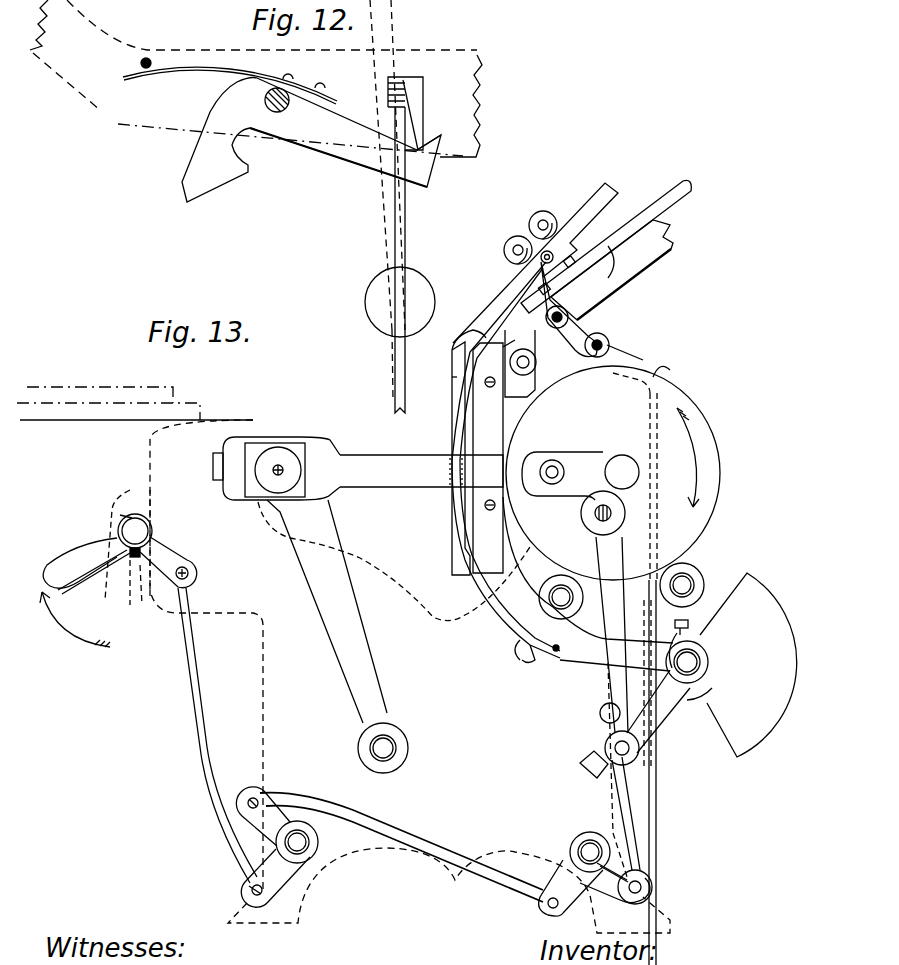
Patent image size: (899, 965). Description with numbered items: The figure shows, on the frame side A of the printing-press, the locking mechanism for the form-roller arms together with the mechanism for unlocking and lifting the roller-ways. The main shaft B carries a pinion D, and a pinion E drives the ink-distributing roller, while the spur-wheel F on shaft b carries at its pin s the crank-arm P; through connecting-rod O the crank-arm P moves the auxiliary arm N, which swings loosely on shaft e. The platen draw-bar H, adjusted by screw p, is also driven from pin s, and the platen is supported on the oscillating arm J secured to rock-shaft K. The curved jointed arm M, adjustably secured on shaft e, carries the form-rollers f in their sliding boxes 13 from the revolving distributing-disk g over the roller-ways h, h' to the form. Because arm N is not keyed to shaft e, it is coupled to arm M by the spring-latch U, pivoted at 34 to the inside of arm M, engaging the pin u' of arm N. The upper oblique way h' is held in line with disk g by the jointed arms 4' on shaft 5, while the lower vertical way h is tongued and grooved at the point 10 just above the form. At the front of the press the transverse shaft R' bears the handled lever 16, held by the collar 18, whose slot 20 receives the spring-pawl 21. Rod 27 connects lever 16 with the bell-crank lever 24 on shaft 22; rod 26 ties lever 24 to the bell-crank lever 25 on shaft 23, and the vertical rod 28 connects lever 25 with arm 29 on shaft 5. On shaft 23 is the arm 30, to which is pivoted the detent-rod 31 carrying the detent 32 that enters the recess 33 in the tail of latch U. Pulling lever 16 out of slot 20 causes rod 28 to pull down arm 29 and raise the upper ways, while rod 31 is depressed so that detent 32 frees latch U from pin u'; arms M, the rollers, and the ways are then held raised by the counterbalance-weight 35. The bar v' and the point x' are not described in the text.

In FIG. 12, the detent 32 is at (417, 97).
In FIG. 12, the recess 33 is at (422, 150).
In FIG. 12, the pivot of spring-latch 34 is at (266, 99).
In FIG. 13, the pivot of spring-latch 34 is at (559, 643).
In FIG. 12, the detent-rod 31 is at (408, 227).
In FIG. 13, the detent-rod 31 is at (623, 805).
In FIG. 12, the curved jointed arm M is at (118, 112).
In FIG. 13, the curved jointed arm M is at (456, 432).
In FIG. 12, the spring-latch U is at (282, 130).
In FIG. 13, the spring-latch U is at (597, 670).
In FIG. 13, the upper oblique roller-way h' is at (535, 260).
In FIG. 13, the ink-distributing disk g is at (678, 190).
In FIG. 13, the bar v' is at (619, 268).
In FIG. 13, the form-roller f is at (510, 250).
In FIG. 13, the sliding box 13 is at (556, 250).
In FIG. 13, the jointed arm 4' is at (575, 309).
In FIG. 13, the shaft 5 is at (607, 345).
In FIG. 13, the arm 29 is at (652, 372).
In FIG. 13, the pin x' is at (517, 332).
In FIG. 13, the vertical roller-way h is at (481, 366).
In FIG. 13, the tongue-and-groove point 10 is at (452, 377).
In FIG. 13, the frame side A is at (493, 452).
In FIG. 13, the spur-wheel F is at (720, 470).
In FIG. 13, the connecting-rod H is at (363, 468).
In FIG. 13, the adjusting-screw p is at (213, 465).
In FIG. 13, the revolving arm P is at (573, 493).
In FIG. 13, the pin s is at (552, 472).
In FIG. 13, the shaft b is at (622, 472).
In FIG. 13, the oscillating arm J is at (327, 611).
In FIG. 13, the rock-shaft K is at (380, 747).
In FIG. 13, the transverse shaft R' is at (150, 523).
In FIG. 13, the collar 18 is at (126, 516).
In FIG. 13, the slot 20 is at (148, 543).
In FIG. 13, the spring-pawl 21 is at (143, 553).
In FIG. 13, the handled lever 16 is at (67, 558).
In FIG. 13, the rod 27 is at (207, 758).
In FIG. 13, the bell-crank lever 24 is at (280, 873).
In FIG. 13, the transverse shaft 22 is at (300, 841).
In FIG. 13, the rod 26 is at (457, 838).
In FIG. 13, the transverse shaft 23 is at (587, 850).
In FIG. 13, the bell-crank lever 25 is at (543, 908).
In FIG. 13, the arm 30 is at (617, 875).
In FIG. 13, the vertical rod 28 is at (657, 790).
In FIG. 13, the connecting-rod O is at (612, 635).
In FIG. 13, the pin u' is at (599, 740).
In FIG. 13, the auxiliary arm N is at (658, 711).
In FIG. 13, the shaft e is at (687, 662).
In FIG. 13, the counterbalance-weight 35 is at (732, 665).
In FIG. 13, the pinion E is at (697, 577).
In FIG. 13, the pinion D is at (553, 584).
In FIG. 13, the main shaft B is at (556, 597).